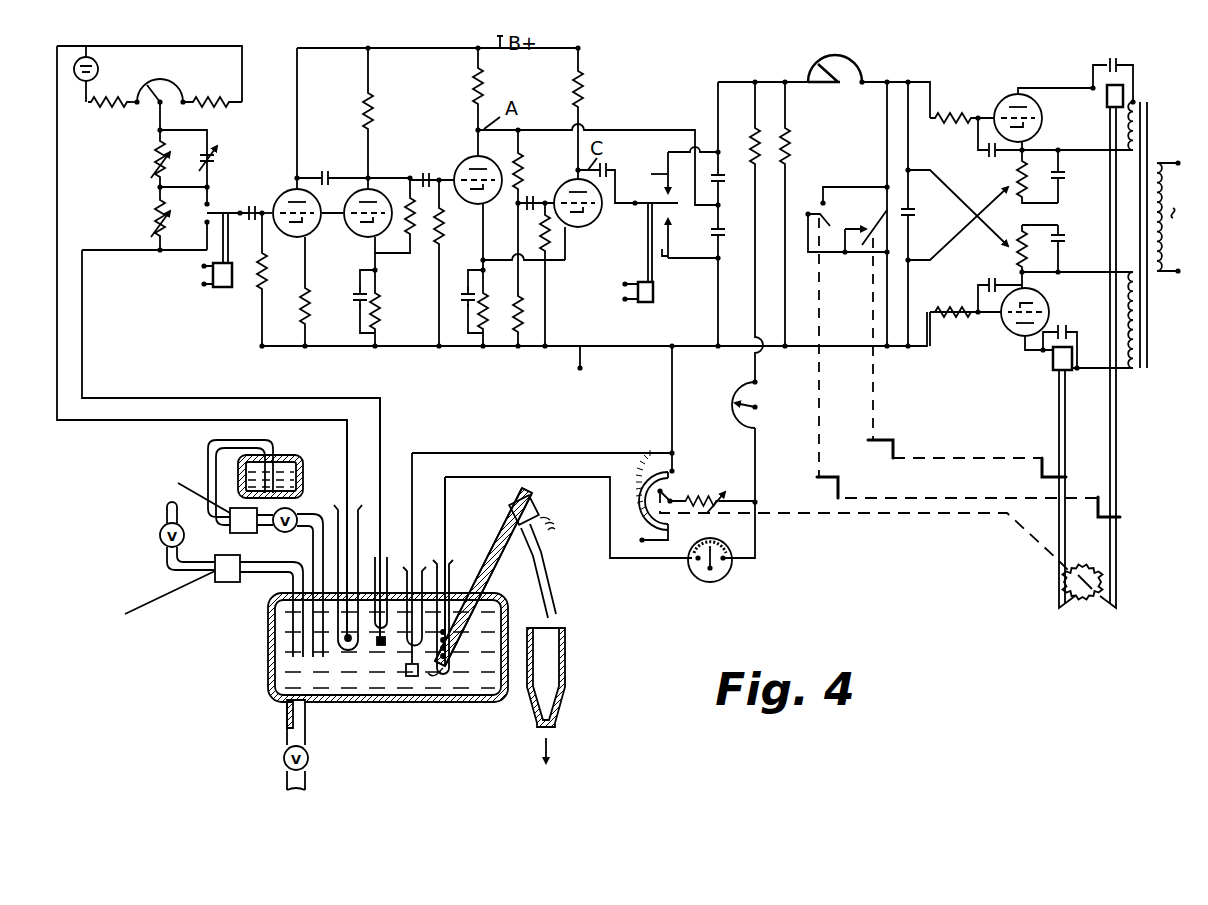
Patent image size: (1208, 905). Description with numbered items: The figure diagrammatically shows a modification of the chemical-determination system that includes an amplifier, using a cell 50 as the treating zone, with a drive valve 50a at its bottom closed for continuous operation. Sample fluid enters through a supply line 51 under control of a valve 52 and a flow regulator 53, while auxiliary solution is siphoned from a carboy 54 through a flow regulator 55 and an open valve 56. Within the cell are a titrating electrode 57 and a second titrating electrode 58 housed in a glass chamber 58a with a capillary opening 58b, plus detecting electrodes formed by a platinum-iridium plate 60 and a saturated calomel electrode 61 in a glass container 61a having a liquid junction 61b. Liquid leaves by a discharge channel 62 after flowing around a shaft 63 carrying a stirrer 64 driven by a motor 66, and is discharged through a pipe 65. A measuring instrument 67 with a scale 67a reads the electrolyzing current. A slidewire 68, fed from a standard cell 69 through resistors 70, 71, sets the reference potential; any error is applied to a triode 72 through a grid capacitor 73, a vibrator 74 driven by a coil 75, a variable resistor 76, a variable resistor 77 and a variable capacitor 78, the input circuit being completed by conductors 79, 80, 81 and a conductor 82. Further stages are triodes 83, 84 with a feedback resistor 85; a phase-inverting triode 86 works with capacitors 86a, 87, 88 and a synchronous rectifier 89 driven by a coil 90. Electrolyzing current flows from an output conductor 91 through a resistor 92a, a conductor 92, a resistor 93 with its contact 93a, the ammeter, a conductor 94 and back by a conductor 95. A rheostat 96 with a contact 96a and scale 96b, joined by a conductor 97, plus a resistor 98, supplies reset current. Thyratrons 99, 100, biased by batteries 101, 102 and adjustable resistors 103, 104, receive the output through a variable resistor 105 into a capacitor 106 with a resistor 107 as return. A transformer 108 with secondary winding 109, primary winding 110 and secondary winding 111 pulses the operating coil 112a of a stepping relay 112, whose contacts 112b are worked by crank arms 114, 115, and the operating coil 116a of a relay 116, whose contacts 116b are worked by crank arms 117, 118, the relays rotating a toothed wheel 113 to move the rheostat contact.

The cell 50 is at (270, 641).
The drive valve 50a is at (284, 758).
The supply line 51 is at (165, 510).
The valve 52 is at (161, 541).
The flow regulator 53 is at (218, 581).
The carboy 54 is at (303, 470).
The flow regulator 55 is at (230, 526).
The valve 56 is at (280, 531).
The titrating electrode 57 is at (412, 648).
The titrating electrode 58 is at (449, 677).
The chamber 58a is at (451, 561).
The capillary opening 58b is at (446, 668).
The platinum-iridium plate 60 is at (380, 648).
The saturated calomel electrode 61 is at (340, 660).
The glass container 61a is at (338, 530).
The liquid junction 61b is at (348, 646).
The discharge channel 62 is at (548, 590).
The shaft 63 is at (509, 524).
The stirrer 64 is at (420, 680).
The pipe 65 is at (566, 661).
The motor 66 is at (541, 506).
The measuring instrument 67 is at (728, 573).
The scale 67a is at (694, 556).
The slidewire 68 is at (172, 96).
The standard cell 69 is at (98, 69).
The resistor 70 is at (110, 106).
The resistor 71 is at (220, 108).
The triode 72 is at (290, 197).
The grid capacitor 73 is at (252, 222).
The vibrator 74 is at (222, 212).
The coil 75 is at (220, 288).
The variable resistor 76 is at (155, 223).
The variable resistor 77 is at (157, 160).
The variable capacitor 78 is at (203, 158).
The conductor 79 is at (513, 348).
The conductor 80 is at (672, 421).
The conductor 81 is at (546, 452).
The conductor 82 is at (84, 328).
The triode 83 is at (364, 186).
The triode 84 is at (466, 160).
The feedback resistor 85 is at (432, 228).
The triode 86 is at (560, 198).
The capacitor 86a is at (610, 166).
The capacitor 87 is at (722, 183).
The capacitor 88 is at (711, 232).
The synchronous rectifier 89 is at (634, 205).
The coil 90 is at (645, 302).
The output conductor 91 is at (728, 82).
The conductor 92 is at (753, 244).
The resistor 92a is at (752, 150).
The resistor 93 is at (735, 405).
The contact 93a is at (756, 409).
The conductor 94 is at (610, 500).
The conductor 95 is at (718, 312).
The rheostat 96 is at (642, 490).
The contact 96a is at (673, 498).
The scale 96b is at (658, 468).
The conductor 97 is at (675, 465).
The resistor 98 is at (719, 515).
The thyratron 99 is at (1010, 100).
The thyratron 100 is at (1042, 306).
The battery 101 is at (1066, 176).
The battery 102 is at (1066, 238).
The adjustable resistor 103 is at (1016, 181).
The adjustable resistor 104 is at (1016, 252).
The variable resistor 105 is at (862, 70).
The capacitor 106 is at (911, 213).
The resistor 107 is at (792, 150).
The transformer 108 is at (1149, 157).
The secondary winding 109 is at (1128, 130).
The primary winding 110 is at (1163, 216).
The secondary winding 111 is at (1128, 327).
The stepping relay 112 is at (1117, 445).
The operating coil 112a is at (1107, 93).
The contacts 112b is at (827, 222).
The toothed wheel 113 is at (1088, 600).
The crank arm 114 is at (1096, 517).
The crank arm 115 is at (838, 477).
The relay 116 is at (1066, 445).
The operating coil 116a is at (1053, 362).
The contacts 116b is at (868, 224).
The crank arm 117 is at (1040, 458).
The crank arm 118 is at (896, 438).